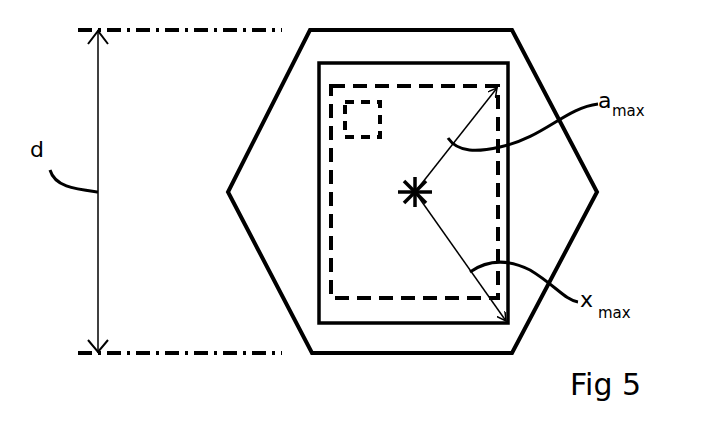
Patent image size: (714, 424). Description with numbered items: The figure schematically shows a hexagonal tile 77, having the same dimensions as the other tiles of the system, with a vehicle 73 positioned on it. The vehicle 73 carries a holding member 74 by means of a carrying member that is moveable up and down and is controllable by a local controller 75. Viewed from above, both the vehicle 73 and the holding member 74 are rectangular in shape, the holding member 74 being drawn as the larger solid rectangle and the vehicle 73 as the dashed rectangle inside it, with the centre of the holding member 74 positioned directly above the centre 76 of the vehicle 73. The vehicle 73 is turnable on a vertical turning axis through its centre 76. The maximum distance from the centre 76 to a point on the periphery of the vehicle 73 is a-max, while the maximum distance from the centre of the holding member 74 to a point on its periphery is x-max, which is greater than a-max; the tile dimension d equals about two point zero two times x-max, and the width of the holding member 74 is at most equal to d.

The vehicle 73 is at (332, 255).
The holding member 74 is at (318, 220).
The local controller 75 is at (348, 120).
The centre 76 is at (410, 190).
The hexagonal tile 77 is at (563, 222).